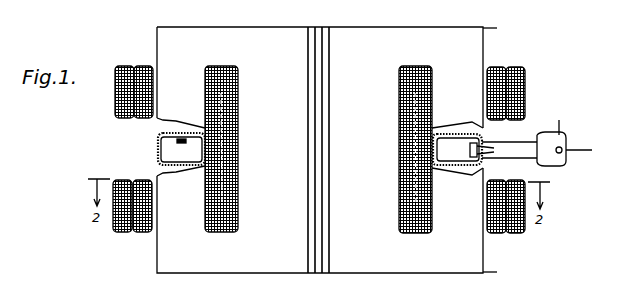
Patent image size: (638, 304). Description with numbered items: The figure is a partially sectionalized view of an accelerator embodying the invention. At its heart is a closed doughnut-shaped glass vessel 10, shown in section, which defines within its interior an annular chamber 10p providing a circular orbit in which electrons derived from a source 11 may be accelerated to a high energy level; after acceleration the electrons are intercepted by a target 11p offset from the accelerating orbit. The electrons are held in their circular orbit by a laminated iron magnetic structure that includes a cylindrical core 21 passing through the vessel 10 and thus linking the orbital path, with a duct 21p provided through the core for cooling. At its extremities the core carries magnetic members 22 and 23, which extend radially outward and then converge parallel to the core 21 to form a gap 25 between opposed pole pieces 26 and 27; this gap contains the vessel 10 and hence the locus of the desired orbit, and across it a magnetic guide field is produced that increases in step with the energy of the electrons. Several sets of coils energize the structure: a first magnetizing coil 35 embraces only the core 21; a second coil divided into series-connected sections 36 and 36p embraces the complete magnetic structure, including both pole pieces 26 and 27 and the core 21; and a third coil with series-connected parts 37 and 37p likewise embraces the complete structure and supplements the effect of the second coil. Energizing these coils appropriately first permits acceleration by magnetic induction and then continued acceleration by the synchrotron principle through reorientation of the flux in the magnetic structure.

The glass vessel 10 is at (158, 134).
The annular chamber 10p is at (437, 152).
The source 11 is at (470, 150).
The target 11p is at (181, 143).
The cylindrical core 21 is at (320, 150).
The duct 21p is at (318, 275).
The magnetic member 22 is at (483, 28).
The magnetic member 23 is at (483, 272).
The gap 25 is at (468, 171).
The pole piece 26 is at (458, 124).
The pole piece 27 is at (458, 178).
The first magnetizing coil 35 is at (222, 233).
The second coil section 36 is at (143, 67).
The third coil part 37 is at (124, 67).
The second coil section 36p is at (142, 232).
The third coil part 37p is at (117, 232).